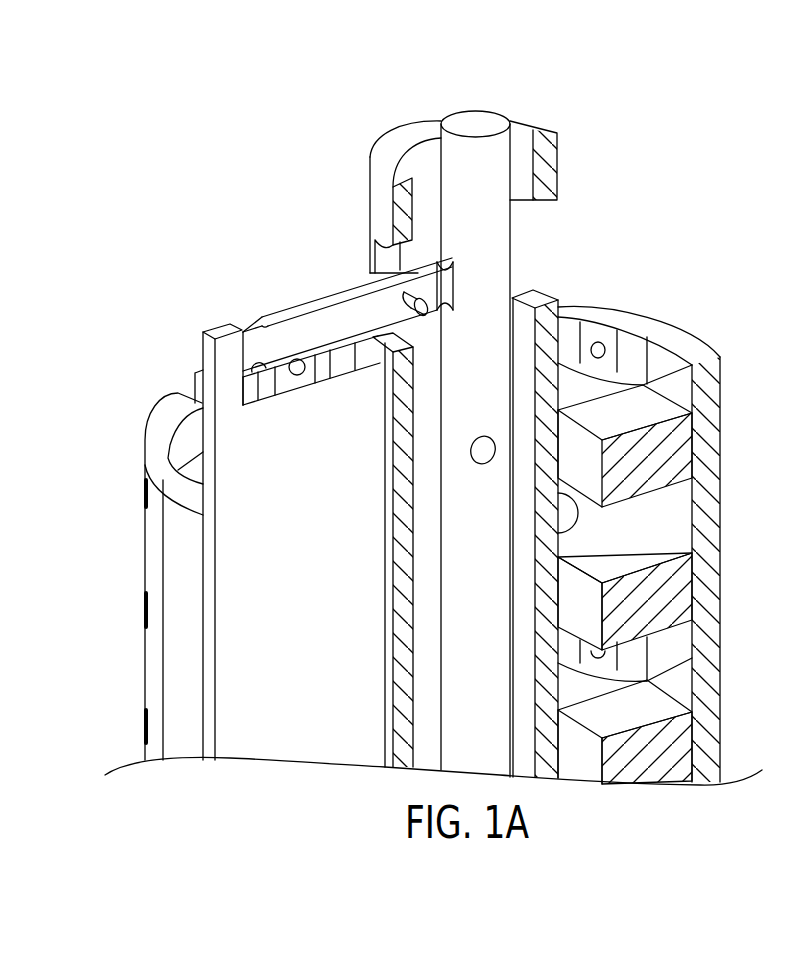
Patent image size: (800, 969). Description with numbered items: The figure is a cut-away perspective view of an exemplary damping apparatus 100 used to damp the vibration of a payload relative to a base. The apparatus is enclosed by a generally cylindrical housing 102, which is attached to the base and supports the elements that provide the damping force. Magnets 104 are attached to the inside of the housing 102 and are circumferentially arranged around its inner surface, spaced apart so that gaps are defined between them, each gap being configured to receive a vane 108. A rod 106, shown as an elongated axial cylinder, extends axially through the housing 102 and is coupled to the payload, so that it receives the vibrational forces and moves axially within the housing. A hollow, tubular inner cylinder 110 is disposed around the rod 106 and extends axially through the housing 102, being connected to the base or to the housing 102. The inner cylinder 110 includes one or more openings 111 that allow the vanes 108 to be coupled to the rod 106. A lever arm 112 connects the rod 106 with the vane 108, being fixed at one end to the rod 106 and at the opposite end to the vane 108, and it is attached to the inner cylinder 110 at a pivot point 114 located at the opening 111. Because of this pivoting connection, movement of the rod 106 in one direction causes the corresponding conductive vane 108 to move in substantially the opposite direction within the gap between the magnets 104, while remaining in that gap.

The damping apparatus 100 is at (262, 110).
The housing 102 is at (590, 333).
The magnets 104 is at (680, 445).
The rod 106 is at (492, 217).
The vanes 108 is at (272, 442).
The inner cylinder 110 is at (383, 162).
The openings 111 is at (522, 276).
The lever arm 112 is at (320, 322).
The pivot point 114 is at (410, 302).